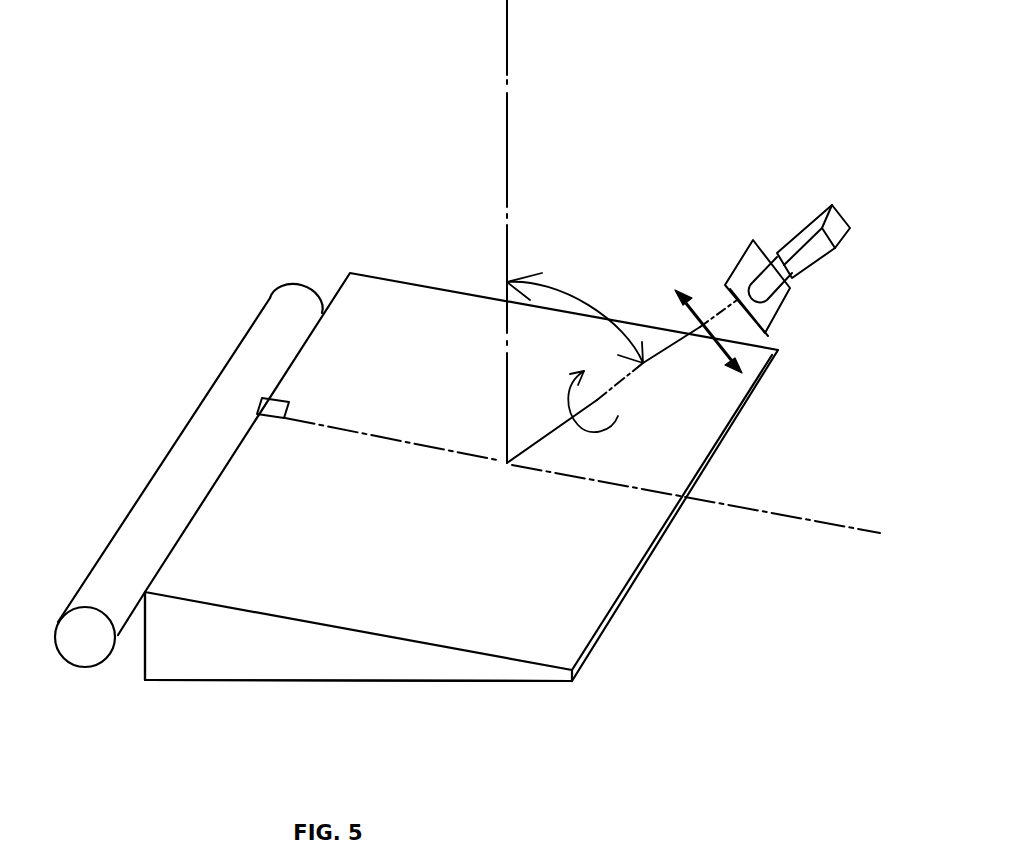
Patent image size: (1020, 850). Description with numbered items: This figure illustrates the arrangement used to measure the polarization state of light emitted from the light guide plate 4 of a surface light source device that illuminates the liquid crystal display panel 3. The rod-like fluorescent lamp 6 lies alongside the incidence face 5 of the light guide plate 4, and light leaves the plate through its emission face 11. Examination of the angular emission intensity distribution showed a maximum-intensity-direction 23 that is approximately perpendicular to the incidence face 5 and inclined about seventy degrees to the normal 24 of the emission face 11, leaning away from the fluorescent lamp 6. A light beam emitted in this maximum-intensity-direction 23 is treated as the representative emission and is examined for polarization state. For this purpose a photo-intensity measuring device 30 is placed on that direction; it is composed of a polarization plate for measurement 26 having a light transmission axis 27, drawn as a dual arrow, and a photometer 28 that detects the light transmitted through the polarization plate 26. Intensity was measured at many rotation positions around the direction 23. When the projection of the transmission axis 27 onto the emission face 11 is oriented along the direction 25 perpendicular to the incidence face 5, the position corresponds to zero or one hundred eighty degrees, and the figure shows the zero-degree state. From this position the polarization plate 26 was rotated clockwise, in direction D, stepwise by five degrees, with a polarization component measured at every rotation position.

The liquid crystal display panel 3 is at (329, 702).
The light guide plate 4 is at (229, 677).
The incidence face 5 is at (142, 652).
The rod-like fluorescent lamp 6 is at (82, 648).
The emission face 11 is at (597, 550).
The maximum-intensity-direction 23 is at (670, 347).
The normal 24 is at (507, 90).
The direction perpendicular to the incidence face 25 is at (773, 512).
The polarization plate for measurement 26 is at (732, 267).
The light transmission axis 27 is at (778, 350).
The photometer 28 is at (795, 237).
The photo-intensity measuring device 30 is at (822, 197).